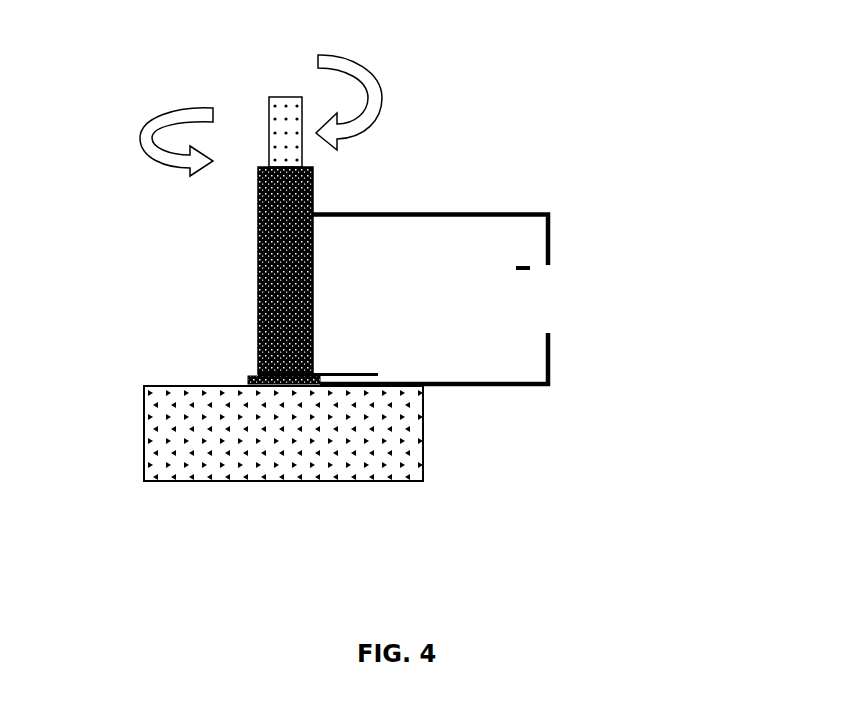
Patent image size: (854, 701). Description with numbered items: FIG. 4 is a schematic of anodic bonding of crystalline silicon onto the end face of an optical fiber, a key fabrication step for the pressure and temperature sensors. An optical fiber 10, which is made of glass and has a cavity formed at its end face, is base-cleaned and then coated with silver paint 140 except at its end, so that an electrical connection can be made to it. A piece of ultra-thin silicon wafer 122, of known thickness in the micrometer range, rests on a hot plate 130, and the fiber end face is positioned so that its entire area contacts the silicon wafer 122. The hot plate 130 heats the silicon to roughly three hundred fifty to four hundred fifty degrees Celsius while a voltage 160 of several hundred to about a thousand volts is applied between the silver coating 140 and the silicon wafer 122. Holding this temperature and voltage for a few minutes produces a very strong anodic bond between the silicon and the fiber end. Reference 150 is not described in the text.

The optical fiber 10 is at (273, 113).
The silicon wafer 122 is at (248, 377).
The hot plate 130 is at (173, 424).
The silver paint 140 is at (315, 183).
The electrode plate 150 is at (369, 347).
The voltage 160 is at (652, 300).